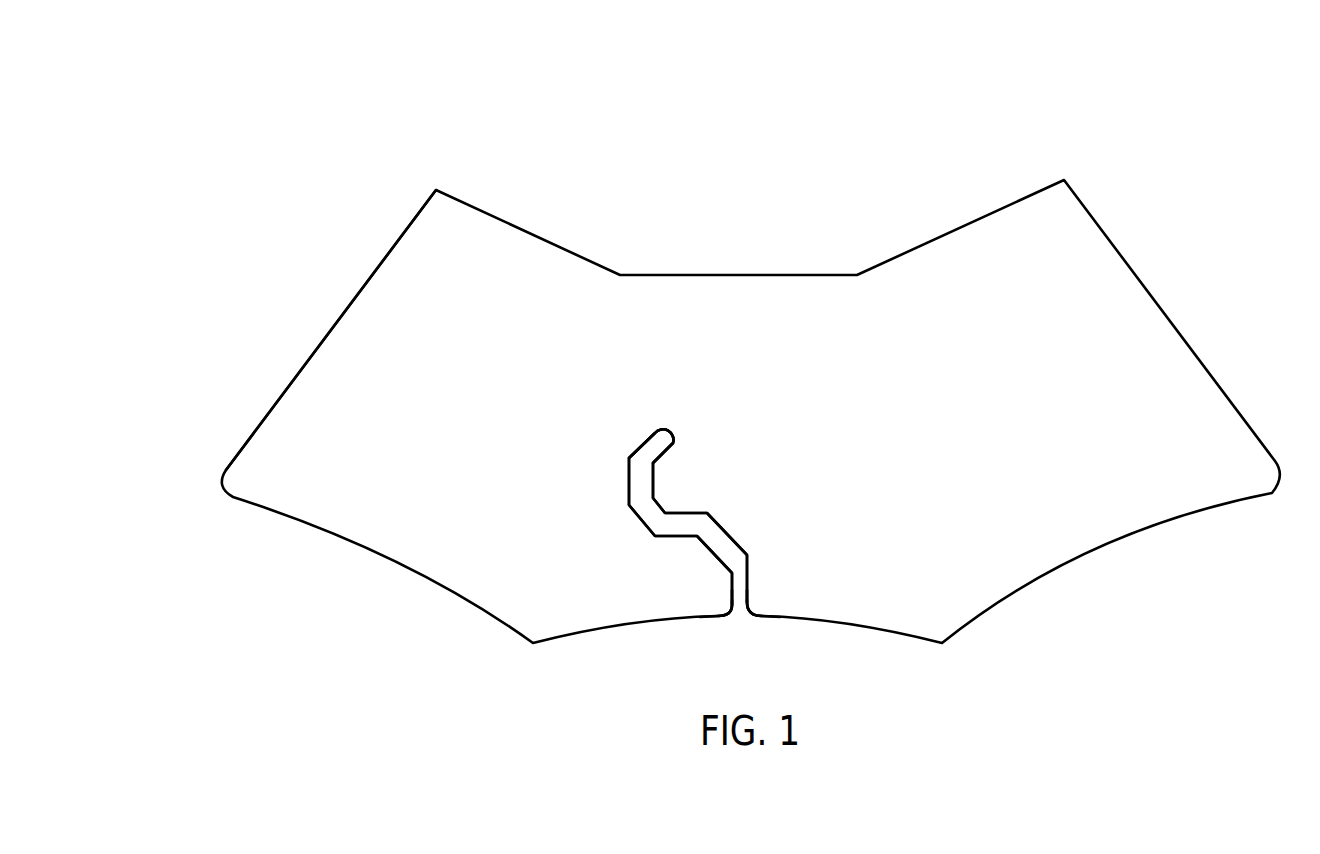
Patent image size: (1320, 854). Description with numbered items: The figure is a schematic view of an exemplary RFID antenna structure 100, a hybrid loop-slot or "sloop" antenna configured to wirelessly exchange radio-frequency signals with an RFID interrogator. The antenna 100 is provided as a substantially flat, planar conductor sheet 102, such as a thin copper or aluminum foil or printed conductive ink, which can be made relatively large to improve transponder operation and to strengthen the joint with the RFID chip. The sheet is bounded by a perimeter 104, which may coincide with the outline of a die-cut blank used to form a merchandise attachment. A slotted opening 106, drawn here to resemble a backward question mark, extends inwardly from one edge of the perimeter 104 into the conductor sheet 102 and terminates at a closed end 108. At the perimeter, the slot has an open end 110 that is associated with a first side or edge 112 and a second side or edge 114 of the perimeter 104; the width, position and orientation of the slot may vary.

The RFID antenna structure 100 is at (379, 136).
The conductor sheet 102 is at (951, 386).
The perimeter 104 is at (307, 361).
The slotted opening 106 is at (728, 533).
The closed end 108 is at (661, 432).
The open end 110 is at (741, 615).
The first side or edge 112 is at (712, 617).
The second side or edge 114 is at (763, 617).